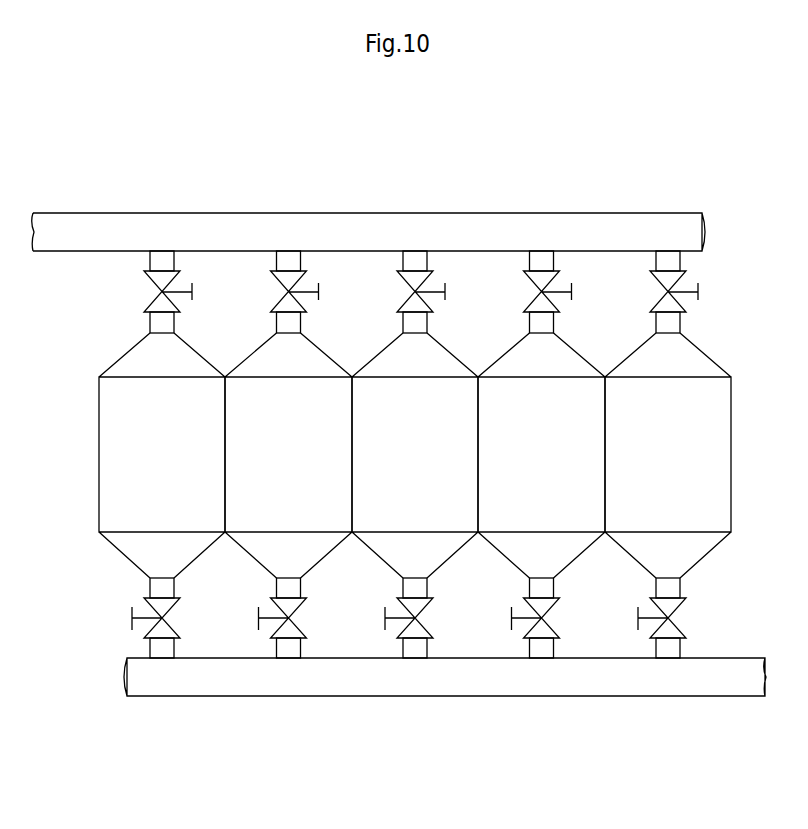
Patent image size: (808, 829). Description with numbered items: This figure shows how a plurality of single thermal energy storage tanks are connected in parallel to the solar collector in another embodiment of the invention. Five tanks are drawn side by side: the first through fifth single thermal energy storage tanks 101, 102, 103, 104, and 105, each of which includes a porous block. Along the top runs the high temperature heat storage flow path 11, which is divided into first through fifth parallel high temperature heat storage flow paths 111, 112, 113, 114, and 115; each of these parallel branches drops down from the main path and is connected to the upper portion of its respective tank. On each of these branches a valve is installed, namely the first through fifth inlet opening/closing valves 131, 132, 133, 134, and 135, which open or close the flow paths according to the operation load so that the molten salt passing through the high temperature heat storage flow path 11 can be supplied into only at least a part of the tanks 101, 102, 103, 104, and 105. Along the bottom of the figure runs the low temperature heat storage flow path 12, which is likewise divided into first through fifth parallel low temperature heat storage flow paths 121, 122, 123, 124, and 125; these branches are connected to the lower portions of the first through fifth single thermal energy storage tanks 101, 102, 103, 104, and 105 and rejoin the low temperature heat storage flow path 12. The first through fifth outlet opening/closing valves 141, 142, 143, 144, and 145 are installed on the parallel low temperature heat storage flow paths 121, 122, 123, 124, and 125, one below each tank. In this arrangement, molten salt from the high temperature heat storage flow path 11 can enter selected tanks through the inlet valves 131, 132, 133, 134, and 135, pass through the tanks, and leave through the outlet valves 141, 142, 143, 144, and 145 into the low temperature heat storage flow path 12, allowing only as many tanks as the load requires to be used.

The high temperature heat storage flow path 11 is at (397, 212).
The low temperature heat storage flow path 12 is at (446, 697).
The first single thermal energy storage tank 101 is at (115, 383).
The second single thermal energy storage tank 102 is at (256, 387).
The third single thermal energy storage tank 103 is at (382, 387).
The fourth single thermal energy storage tank 104 is at (508, 387).
The fifth single thermal energy storage tank 105 is at (635, 387).
The first parallel high temperature heat storage flow path 111 is at (149, 260).
The second parallel high temperature heat storage flow path 112 is at (276, 260).
The third parallel high temperature heat storage flow path 113 is at (402, 260).
The fourth parallel high temperature heat storage flow path 114 is at (528, 260).
The fifth parallel high temperature heat storage flow path 115 is at (655, 260).
The first parallel low temperature heat storage flow path 121 is at (149, 649).
The second parallel low temperature heat storage flow path 122 is at (276, 649).
The third parallel low temperature heat storage flow path 123 is at (402, 649).
The fourth parallel low temperature heat storage flow path 124 is at (528, 649).
The fifth parallel low temperature heat storage flow path 125 is at (655, 649).
The first inlet opening/closing valve 131 is at (193, 292).
The second inlet opening/closing valve 132 is at (320, 292).
The third inlet opening/closing valve 133 is at (446, 292).
The fourth inlet opening/closing valve 134 is at (572, 292).
The fifth inlet opening/closing valve 135 is at (699, 292).
The first outlet opening/closing valve 141 is at (173, 627).
The second outlet opening/closing valve 142 is at (300, 627).
The third outlet opening/closing valve 143 is at (426, 627).
The fourth outlet opening/closing valve 144 is at (552, 627).
The fifth outlet opening/closing valve 145 is at (679, 627).